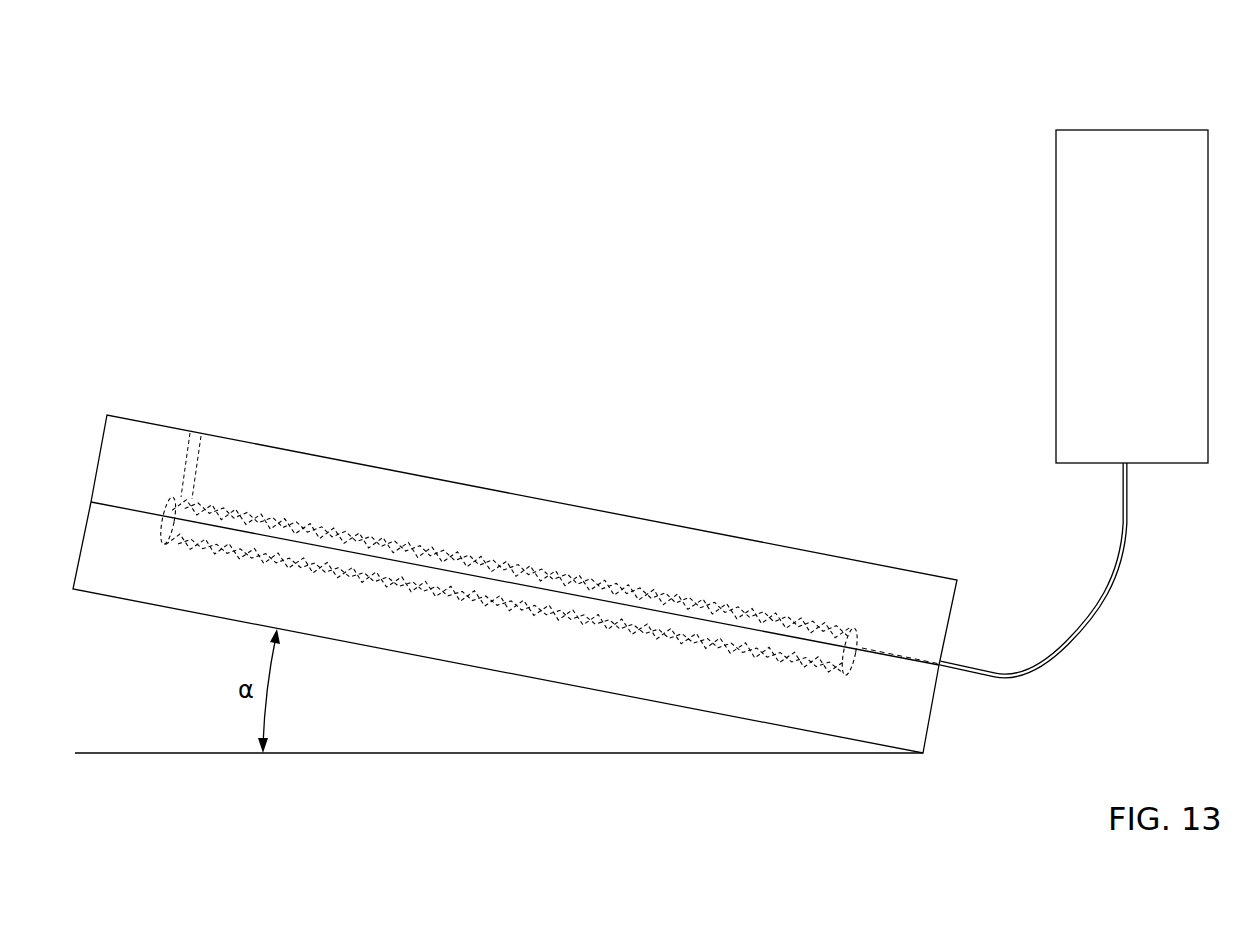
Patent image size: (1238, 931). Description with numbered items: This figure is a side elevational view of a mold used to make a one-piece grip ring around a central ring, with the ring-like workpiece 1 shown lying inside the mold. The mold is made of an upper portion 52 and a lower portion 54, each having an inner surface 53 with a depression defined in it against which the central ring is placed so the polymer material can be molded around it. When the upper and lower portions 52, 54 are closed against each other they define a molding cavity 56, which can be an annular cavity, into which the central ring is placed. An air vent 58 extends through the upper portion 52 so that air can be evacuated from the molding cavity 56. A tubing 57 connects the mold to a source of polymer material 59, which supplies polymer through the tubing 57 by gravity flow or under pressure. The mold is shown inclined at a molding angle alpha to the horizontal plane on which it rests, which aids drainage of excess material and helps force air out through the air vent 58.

The medical device (helical coil) 1 is at (262, 522).
The upper portion 52 is at (760, 562).
The inner surface 53 is at (503, 560).
The lower portion 54 is at (727, 693).
The molding cavity 56 is at (372, 535).
The tubing 57 is at (1125, 549).
The air vent 58 is at (190, 432).
The source of polymer material 59 is at (1132, 130).